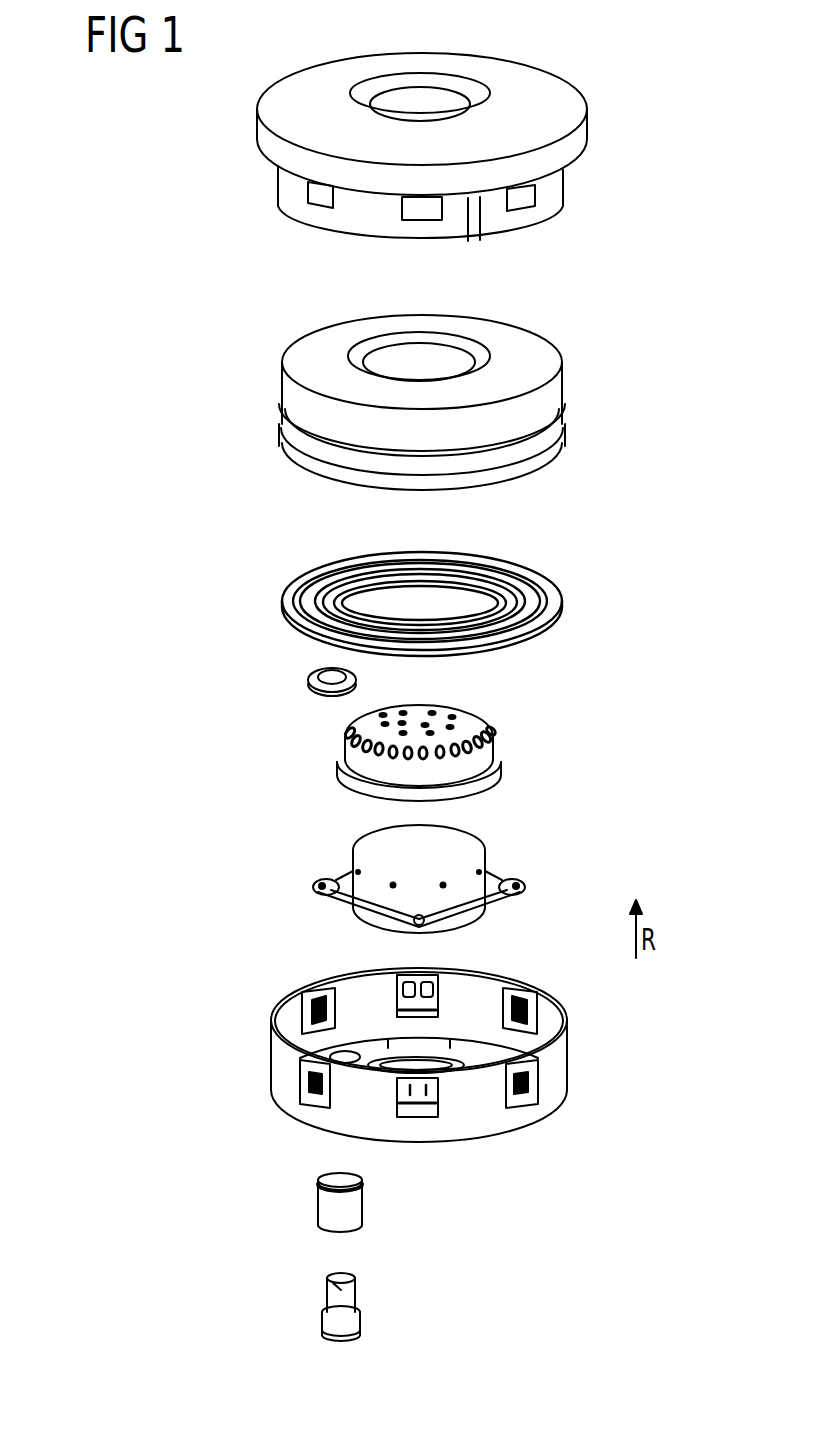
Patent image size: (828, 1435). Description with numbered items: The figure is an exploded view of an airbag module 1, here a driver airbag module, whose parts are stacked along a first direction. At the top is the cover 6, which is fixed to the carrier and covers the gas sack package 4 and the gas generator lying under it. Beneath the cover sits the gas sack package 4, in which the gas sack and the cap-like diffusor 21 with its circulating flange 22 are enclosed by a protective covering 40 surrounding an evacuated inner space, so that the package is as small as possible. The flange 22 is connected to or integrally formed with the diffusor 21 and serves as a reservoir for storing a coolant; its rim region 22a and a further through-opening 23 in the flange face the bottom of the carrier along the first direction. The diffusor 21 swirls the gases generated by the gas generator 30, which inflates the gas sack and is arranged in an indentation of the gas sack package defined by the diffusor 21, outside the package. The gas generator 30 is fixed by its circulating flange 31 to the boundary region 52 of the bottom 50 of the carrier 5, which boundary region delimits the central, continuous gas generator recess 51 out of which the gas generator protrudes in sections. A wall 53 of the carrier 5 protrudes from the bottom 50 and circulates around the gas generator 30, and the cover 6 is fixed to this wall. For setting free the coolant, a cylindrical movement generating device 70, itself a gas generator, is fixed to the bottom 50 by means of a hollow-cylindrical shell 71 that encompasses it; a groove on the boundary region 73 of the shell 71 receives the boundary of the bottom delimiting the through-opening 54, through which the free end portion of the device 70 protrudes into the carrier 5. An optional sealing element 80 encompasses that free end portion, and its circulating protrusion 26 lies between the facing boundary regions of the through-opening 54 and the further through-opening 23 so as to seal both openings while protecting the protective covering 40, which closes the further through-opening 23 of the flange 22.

The airbag module 1 is at (613, 233).
The gas sack package 4 is at (465, 402).
The carrier 5 is at (452, 1036).
The cover 6 is at (553, 92).
The diffusor 21 is at (497, 757).
The circulating flange 22 is at (423, 588).
The membrane rim 22a is at (317, 588).
The further through-opening 23 is at (312, 640).
The circulating protrusion 26 is at (358, 680).
The gas generator 30 is at (471, 856).
The circulating flange 31 is at (492, 884).
The protective covering 40 is at (541, 356).
The bottom 50 is at (406, 1001).
The gas generator recess 51 is at (450, 1066).
The boundary region 52 is at (388, 1060).
The wall 53 is at (558, 1068).
The through-opening 54 is at (338, 1051).
The movement generating device 70 is at (350, 1298).
The shell 71 is at (370, 1197).
The boundary region 73 is at (363, 1181).
The sealing element 80 is at (326, 705).